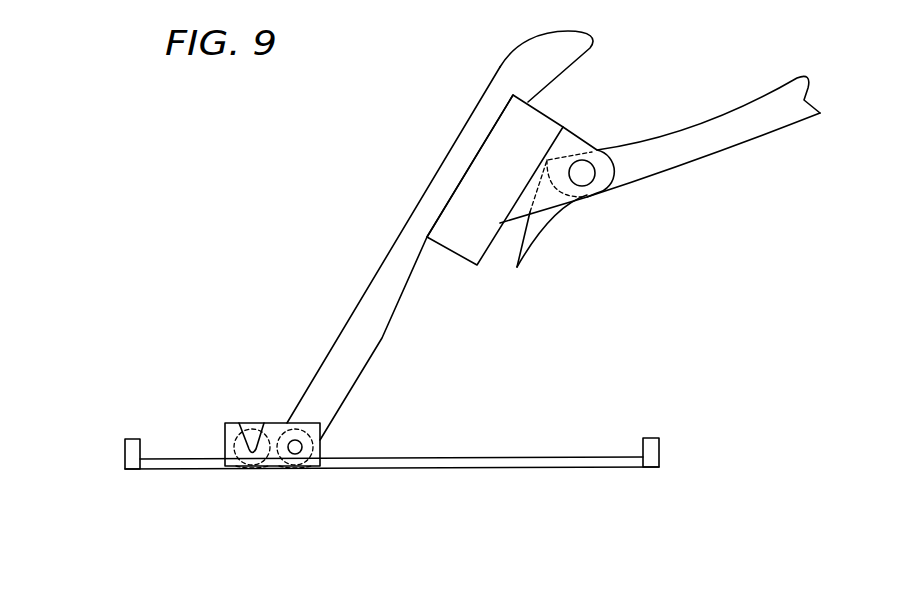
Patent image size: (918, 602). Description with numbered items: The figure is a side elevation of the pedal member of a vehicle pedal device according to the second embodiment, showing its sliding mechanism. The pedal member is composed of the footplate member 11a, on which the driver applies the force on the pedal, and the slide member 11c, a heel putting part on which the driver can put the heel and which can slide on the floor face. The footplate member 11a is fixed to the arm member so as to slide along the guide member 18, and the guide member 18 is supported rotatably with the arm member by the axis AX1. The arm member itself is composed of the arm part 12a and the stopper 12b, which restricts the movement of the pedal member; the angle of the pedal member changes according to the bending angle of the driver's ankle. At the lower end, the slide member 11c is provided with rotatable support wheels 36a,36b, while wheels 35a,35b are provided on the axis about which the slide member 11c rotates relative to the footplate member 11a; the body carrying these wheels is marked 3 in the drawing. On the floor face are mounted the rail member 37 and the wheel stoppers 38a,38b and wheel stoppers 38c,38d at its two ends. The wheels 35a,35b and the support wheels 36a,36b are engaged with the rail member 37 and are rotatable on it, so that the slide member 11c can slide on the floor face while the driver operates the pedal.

The footplate member 11a is at (563, 54).
The slide member 11c is at (243, 432).
The arm part 12a is at (757, 130).
The stopper 12b is at (545, 247).
The guide member 18 is at (462, 257).
The axis AX1 is at (582, 177).
The mounting block 3 is at (295, 440).
The wheels 35a,35b is at (322, 453).
The rotatable support wheels 36a,36b is at (233, 470).
The rail member 37 is at (553, 468).
The wheel stoppers 38a,38b is at (659, 451).
The wheel stoppers 38c,38d is at (125, 455).